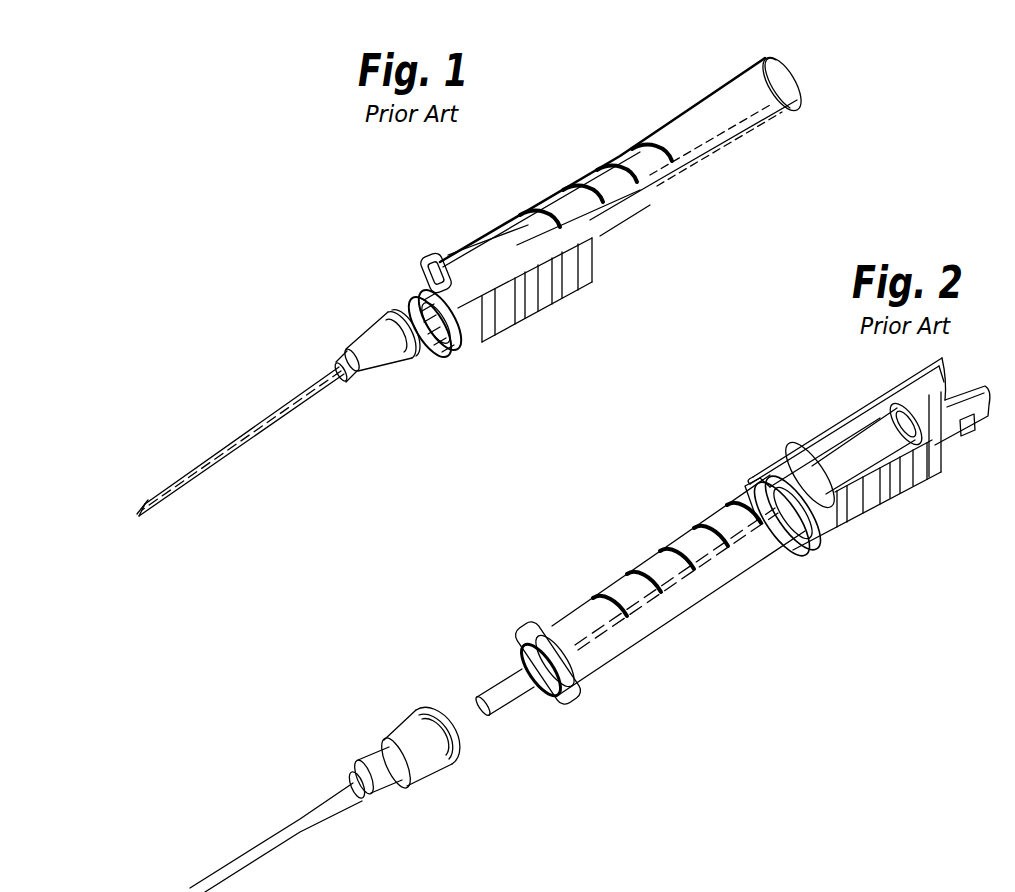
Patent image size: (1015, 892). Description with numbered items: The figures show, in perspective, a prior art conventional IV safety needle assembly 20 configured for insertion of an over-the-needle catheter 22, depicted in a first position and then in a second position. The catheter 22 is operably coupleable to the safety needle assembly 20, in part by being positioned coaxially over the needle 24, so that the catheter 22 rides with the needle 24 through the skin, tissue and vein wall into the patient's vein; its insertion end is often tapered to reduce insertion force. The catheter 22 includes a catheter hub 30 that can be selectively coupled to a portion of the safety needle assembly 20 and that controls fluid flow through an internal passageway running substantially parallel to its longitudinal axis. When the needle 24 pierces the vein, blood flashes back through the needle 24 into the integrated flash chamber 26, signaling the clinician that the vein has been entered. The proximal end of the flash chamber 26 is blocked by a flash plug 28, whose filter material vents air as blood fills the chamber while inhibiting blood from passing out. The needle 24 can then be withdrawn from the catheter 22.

In FIG. 1, the IV safety needle assembly 20 is at (580, 132).
In FIG. 2, the IV safety needle assembly 20 is at (815, 632).
In FIG. 1, the catheter 22 is at (276, 428).
In FIG. 2, the catheter 22 is at (297, 827).
In FIG. 1, the needle 24 is at (136, 519).
In FIG. 2, the needle 24 is at (680, 613).
In FIG. 1, the flash chamber 26 is at (480, 238).
In FIG. 2, the flash chamber 26 is at (810, 433).
In FIG. 1, the flash plug 28 is at (527, 193).
In FIG. 2, the flash plug 28 is at (897, 390).
In FIG. 1, the catheter hub 30 is at (410, 368).
In FIG. 2, the catheter hub 30 is at (400, 730).